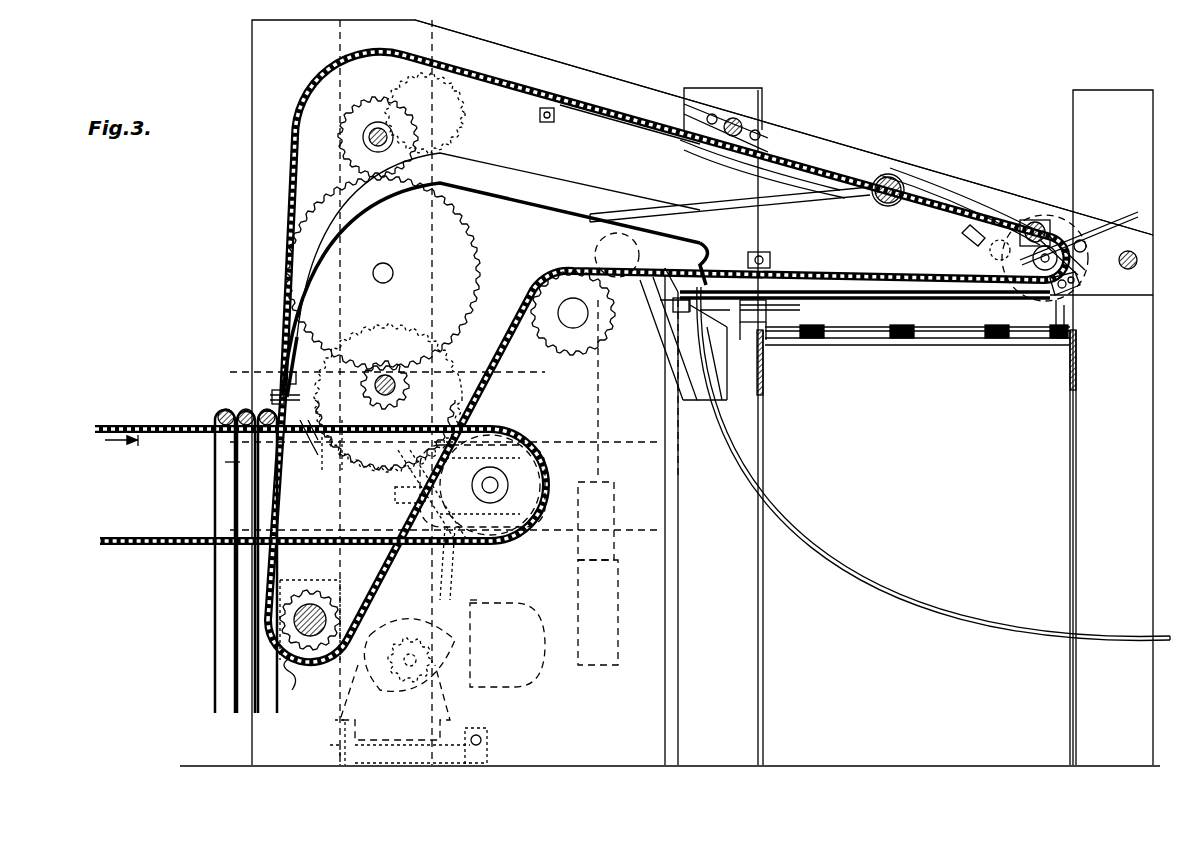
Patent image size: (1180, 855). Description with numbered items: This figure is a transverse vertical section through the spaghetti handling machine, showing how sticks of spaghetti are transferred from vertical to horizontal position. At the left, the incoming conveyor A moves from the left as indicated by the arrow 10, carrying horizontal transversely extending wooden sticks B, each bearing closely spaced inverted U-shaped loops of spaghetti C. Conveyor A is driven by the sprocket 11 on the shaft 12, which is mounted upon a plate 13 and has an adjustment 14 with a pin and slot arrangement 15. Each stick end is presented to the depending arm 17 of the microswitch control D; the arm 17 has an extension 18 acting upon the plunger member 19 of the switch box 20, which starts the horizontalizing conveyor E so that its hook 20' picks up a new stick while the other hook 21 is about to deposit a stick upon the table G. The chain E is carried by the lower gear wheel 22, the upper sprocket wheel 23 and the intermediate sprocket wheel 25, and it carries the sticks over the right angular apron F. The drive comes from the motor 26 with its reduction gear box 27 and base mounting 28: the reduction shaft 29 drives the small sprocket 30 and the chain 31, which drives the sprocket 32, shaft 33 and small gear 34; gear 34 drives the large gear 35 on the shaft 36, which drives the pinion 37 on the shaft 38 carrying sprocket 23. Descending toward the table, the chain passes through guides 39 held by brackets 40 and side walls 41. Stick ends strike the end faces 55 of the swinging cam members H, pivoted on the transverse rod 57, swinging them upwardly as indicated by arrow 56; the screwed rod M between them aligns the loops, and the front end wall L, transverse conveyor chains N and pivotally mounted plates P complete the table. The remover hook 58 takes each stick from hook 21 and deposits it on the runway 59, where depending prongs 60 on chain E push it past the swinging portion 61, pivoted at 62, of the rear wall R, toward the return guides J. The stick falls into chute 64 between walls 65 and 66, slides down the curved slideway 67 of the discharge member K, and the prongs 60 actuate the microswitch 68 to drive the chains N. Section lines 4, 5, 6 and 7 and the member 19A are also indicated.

The section line 4- 4 is at (387, 30).
The section line 5- 5 is at (572, 38).
The section line 6- 6 is at (828, 73).
The section line 7- 7 is at (250, 22).
The arrow 10 is at (124, 459).
The sprocket 11 is at (420, 545).
The shaft 12 is at (495, 495).
The plate 13 is at (545, 472).
The adjustment 14 is at (410, 497).
The pin and slot arrangement 15 is at (520, 460).
The depending arm 17 is at (260, 452).
The extension 18 is at (310, 442).
The plunger member 19 is at (333, 392).
The bar 19A is at (745, 196).
The switch box 20 is at (257, 365).
The hook 20' is at (293, 692).
The hook 21 is at (872, 178).
The lower gear wheel 22 is at (342, 652).
The upper sprocket wheel 23 is at (448, 113).
The intermediate sprocket wheel 25 is at (549, 340).
The motor 26 is at (525, 672).
The reduction gear box 27 is at (412, 712).
The base mounting 28 is at (485, 745).
The reduction shaft 29 is at (420, 665).
The small sprocket 30 is at (408, 640).
The chain 31 is at (440, 607).
The sprocket 32 is at (440, 372).
The shaft 33 is at (390, 378).
The small gear 34 is at (384, 425).
The large gear 35 is at (472, 240).
The shaft 36 is at (395, 260).
The pinion 37 is at (403, 104).
The shaft 38 is at (368, 138).
The guides 39 is at (635, 127).
The brackets 40 is at (553, 120).
The side walls 41 is at (622, 98).
The end faces 55 is at (783, 160).
The arrow 56 is at (990, 202).
The transverse rod 57 is at (735, 120).
The remover hook 58 is at (1112, 222).
The runway 59 is at (968, 300).
The depending prongs 60 is at (688, 282).
The swinging portion 61 is at (785, 285).
The pivot 62 is at (768, 255).
The chute 64 is at (700, 378).
The wall 65 is at (725, 403).
The wall 66 is at (680, 350).
The curved slideway 67 is at (946, 607).
The microswitch 68 is at (660, 328).
The incoming conveyor A is at (165, 426).
The sticks B is at (218, 416).
The loops of spaghetti C is at (218, 462).
The microswitch control D is at (270, 395).
The horizontalizing conveyor E is at (290, 190).
The right angular apron F is at (495, 195).
The table G is at (918, 346).
The swinging cam control members H is at (955, 182).
The return guides J is at (852, 300).
The chute K is at (836, 562).
The front end wall L is at (1070, 324).
The screwed rod M is at (1035, 222).
The transverse conveyor chains N is at (850, 345).
The pivotally mounted plates P is at (918, 325).
The rear end wall R is at (722, 321).